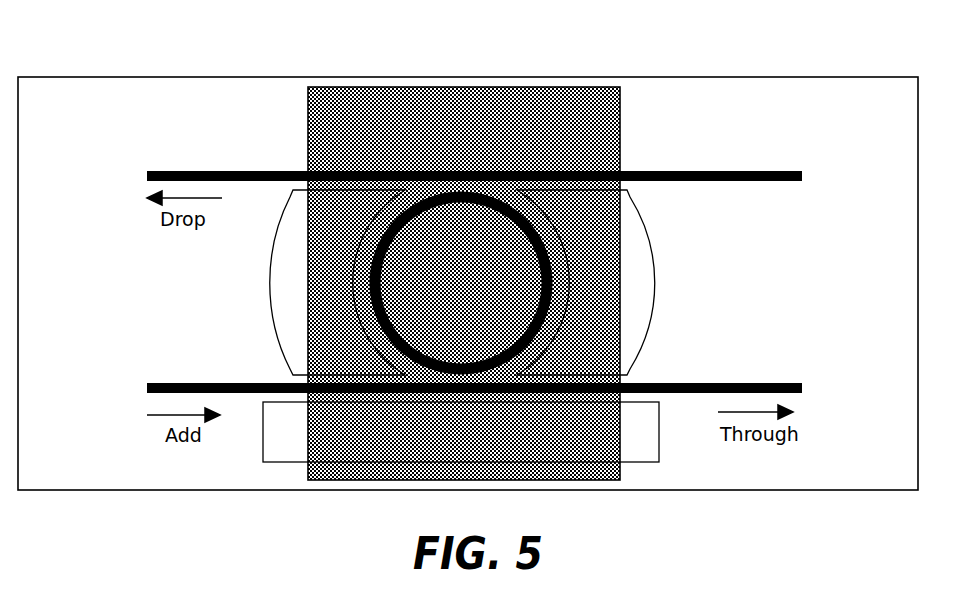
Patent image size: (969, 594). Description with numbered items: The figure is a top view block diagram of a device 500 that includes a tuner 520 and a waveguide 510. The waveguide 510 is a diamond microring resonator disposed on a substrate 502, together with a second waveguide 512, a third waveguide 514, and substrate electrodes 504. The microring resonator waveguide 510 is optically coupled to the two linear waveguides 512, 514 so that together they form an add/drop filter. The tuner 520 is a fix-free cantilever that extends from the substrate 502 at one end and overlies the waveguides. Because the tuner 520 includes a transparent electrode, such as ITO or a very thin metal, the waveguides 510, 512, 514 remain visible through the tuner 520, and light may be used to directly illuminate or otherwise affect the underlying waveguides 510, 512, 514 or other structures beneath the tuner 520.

The device 500 is at (162, 48).
The substrate 502 is at (759, 77).
The substrate electrodes 504 is at (643, 325).
The waveguide 510 is at (527, 333).
The second waveguide 512 is at (255, 171).
The third waveguide 514 is at (255, 383).
The tuner 520 is at (336, 134).